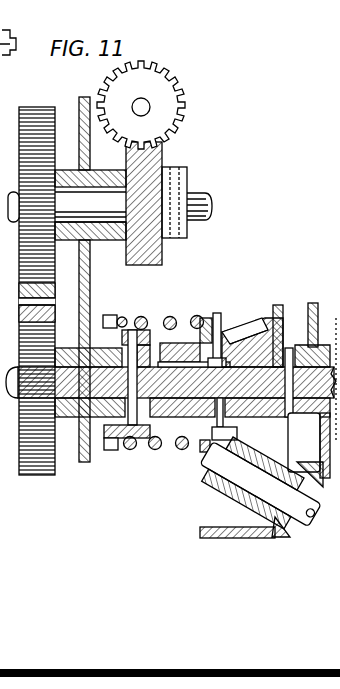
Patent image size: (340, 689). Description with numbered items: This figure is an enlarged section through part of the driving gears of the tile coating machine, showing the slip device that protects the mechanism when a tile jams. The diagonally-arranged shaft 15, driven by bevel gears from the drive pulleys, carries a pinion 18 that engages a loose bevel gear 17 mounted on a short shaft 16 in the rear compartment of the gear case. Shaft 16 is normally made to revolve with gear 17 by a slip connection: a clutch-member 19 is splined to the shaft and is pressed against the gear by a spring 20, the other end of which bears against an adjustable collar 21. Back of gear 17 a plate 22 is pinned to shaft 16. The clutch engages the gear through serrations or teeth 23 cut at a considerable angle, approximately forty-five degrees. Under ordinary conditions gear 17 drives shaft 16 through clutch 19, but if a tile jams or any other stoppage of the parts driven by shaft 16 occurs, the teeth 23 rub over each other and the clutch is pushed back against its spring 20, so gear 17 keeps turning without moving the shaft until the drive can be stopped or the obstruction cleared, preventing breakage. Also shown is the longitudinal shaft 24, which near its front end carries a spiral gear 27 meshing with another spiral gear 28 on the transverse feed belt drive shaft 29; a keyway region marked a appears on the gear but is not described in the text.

The keyway a is at (23, 284).
The diagonally-arranged shaft 15 is at (222, 467).
The short shaft 16 is at (92, 347).
The loose bevel gear 17 is at (293, 300).
The pinion 18 is at (218, 490).
The clutch-member 19 is at (202, 313).
The spring 20 is at (172, 316).
The adjustable collar 21 is at (110, 440).
The plate 22 is at (318, 296).
The serrations or teeth 23 is at (224, 332).
The longitudinal shaft 24 is at (205, 193).
The spiral gear 27 is at (163, 152).
The spiral gear 28 is at (177, 83).
The transverse feed belt drive shaft 29 is at (143, 100).